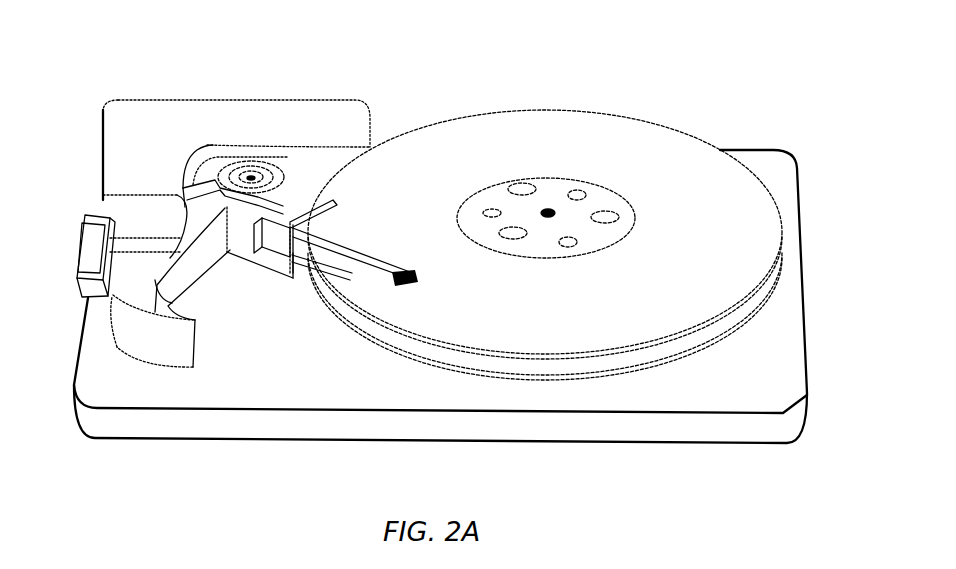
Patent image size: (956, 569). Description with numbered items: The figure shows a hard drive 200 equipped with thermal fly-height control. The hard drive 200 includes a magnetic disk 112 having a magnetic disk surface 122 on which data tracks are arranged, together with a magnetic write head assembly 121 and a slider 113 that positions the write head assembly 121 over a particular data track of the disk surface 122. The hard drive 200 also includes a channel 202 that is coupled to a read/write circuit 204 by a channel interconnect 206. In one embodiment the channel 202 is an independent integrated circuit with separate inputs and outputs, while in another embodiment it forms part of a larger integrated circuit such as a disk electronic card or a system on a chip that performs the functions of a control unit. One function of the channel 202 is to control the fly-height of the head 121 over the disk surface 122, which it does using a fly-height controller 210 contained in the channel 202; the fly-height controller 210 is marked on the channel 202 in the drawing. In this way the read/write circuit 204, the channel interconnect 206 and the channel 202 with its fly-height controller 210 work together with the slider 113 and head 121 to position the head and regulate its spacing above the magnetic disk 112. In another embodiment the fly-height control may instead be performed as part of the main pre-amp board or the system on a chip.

The hard drive 200 is at (567, 50).
The magnetic disk 112 is at (665, 338).
The slider 113 is at (386, 256).
The magnetic write head assembly 121 is at (400, 280).
The magnetic disk surface 122 is at (663, 158).
The channel 202 is at (85, 219).
The read/write circuit 204 is at (275, 237).
The channel interconnect 206 is at (152, 347).
The fly-height controller (FHC) 210 is at (82, 252).